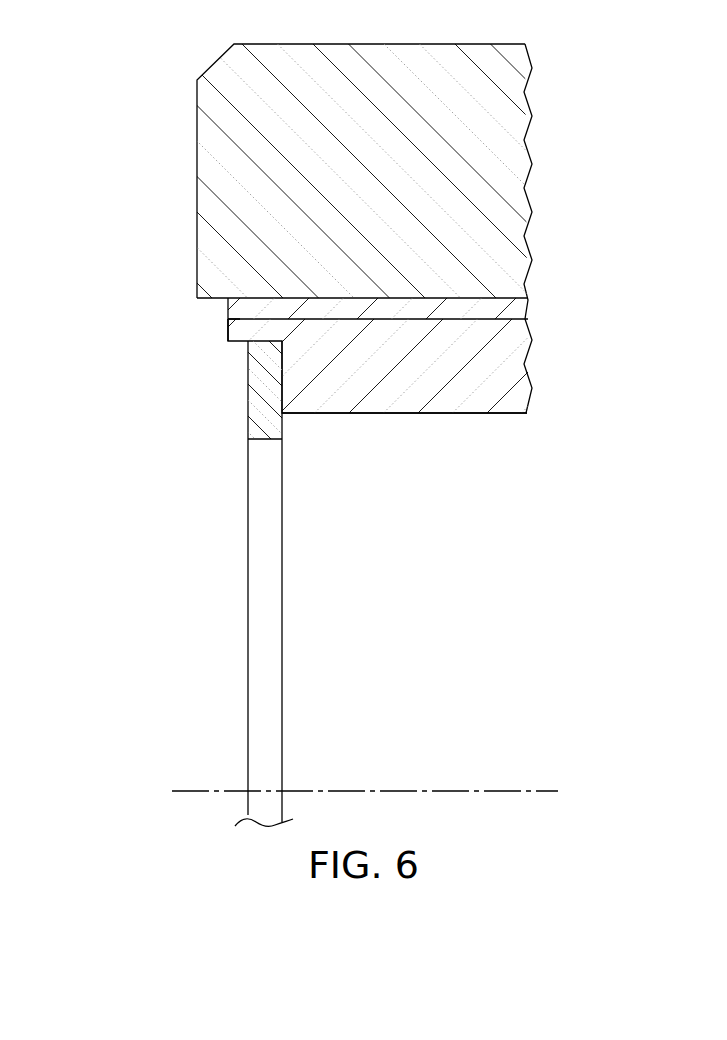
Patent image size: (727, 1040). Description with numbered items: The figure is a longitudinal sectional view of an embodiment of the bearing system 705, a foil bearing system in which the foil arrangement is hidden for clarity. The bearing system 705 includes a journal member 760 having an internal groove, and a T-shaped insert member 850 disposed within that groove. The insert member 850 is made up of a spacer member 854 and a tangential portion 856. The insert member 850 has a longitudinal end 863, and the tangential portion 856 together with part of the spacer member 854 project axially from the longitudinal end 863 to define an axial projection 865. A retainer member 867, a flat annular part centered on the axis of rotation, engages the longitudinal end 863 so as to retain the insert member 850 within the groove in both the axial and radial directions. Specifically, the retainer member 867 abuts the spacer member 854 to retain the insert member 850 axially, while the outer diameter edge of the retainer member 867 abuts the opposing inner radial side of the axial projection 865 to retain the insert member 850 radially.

The bearing system 705 is at (80, 68).
The journal member 760 is at (206, 190).
The tangential portion 856 is at (518, 303).
The T-shaped insert member 850 is at (397, 365).
The spacer member 854 is at (405, 412).
The longitudinal end 863 is at (171, 304).
The axial projection 865 is at (228, 330).
The retainer member 867 is at (259, 367).